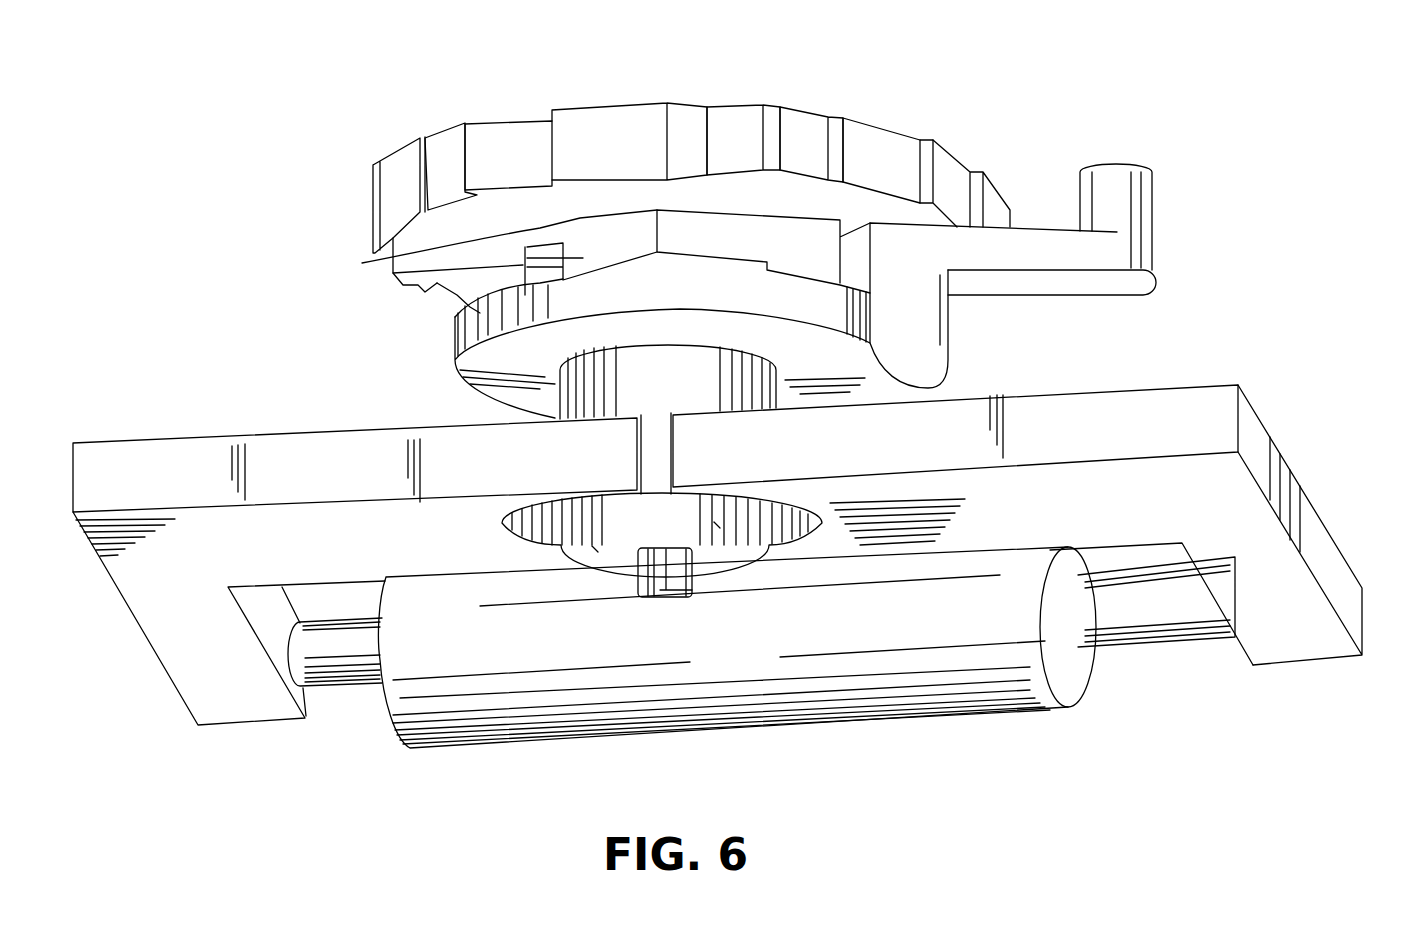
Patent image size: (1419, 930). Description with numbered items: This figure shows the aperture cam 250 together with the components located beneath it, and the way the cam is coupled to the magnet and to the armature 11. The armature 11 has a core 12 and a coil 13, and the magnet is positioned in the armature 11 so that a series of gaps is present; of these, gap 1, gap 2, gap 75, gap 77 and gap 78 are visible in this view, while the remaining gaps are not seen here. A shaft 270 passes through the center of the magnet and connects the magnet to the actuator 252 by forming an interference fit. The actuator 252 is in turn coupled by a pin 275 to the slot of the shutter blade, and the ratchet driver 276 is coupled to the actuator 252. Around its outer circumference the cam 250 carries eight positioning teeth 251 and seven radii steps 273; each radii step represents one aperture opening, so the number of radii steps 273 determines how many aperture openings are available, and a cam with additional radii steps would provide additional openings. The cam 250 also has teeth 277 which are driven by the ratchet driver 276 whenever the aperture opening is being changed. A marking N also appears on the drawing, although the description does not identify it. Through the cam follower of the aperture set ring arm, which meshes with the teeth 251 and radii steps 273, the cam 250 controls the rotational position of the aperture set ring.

The armature 11 is at (1143, 393).
The core 12 is at (1305, 527).
The coil 13 is at (1015, 690).
The gap 75 is at (655, 458).
The gap 77 is at (538, 527).
The gap 78 is at (797, 530).
The gap 1 is at (595, 550).
The gap 2 is at (717, 523).
The boss N is at (660, 528).
The shaft 270 is at (683, 570).
The aperture cam 250 is at (387, 260).
The positioning teeth 251 is at (695, 118).
The actuator 252 is at (460, 340).
The radii steps 273 is at (870, 137).
The pin 275 is at (1143, 200).
The ratchet driver 276 is at (457, 297).
The teeth 277 is at (395, 270).